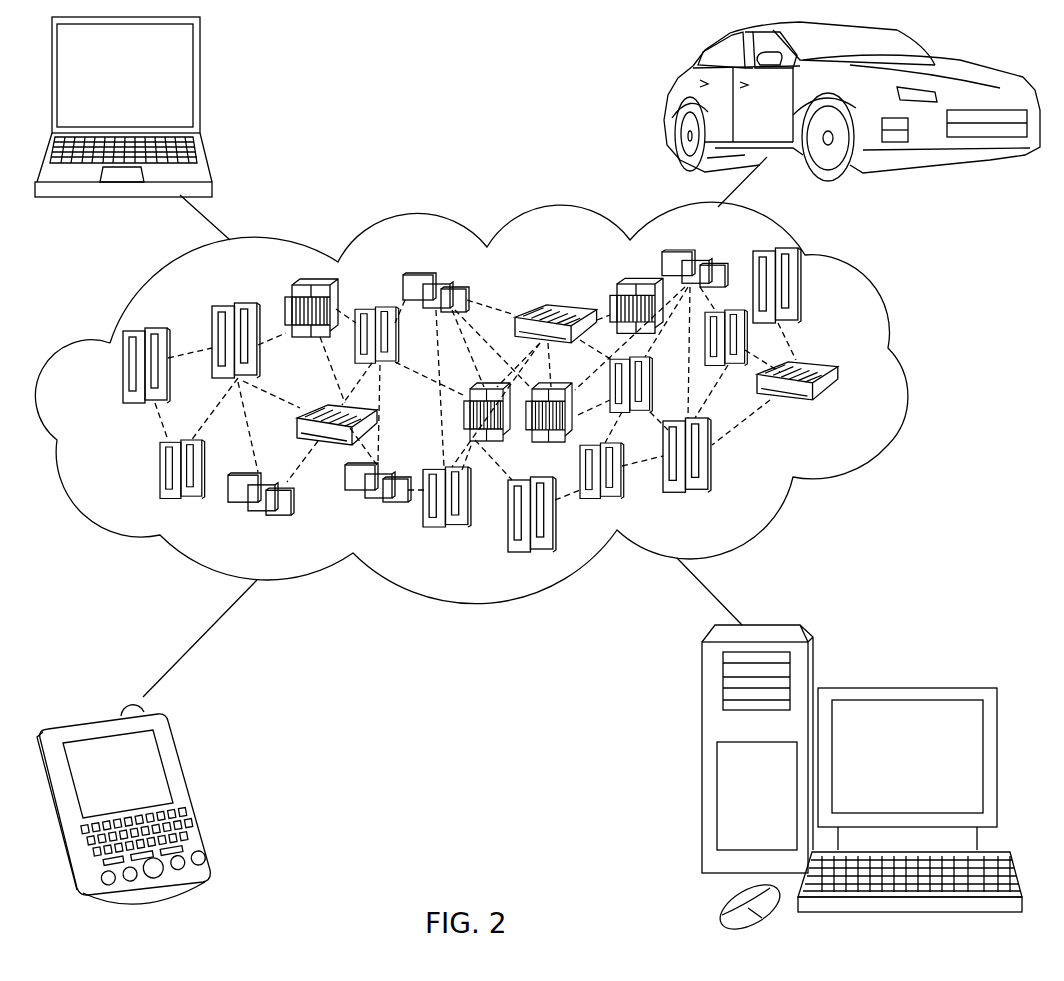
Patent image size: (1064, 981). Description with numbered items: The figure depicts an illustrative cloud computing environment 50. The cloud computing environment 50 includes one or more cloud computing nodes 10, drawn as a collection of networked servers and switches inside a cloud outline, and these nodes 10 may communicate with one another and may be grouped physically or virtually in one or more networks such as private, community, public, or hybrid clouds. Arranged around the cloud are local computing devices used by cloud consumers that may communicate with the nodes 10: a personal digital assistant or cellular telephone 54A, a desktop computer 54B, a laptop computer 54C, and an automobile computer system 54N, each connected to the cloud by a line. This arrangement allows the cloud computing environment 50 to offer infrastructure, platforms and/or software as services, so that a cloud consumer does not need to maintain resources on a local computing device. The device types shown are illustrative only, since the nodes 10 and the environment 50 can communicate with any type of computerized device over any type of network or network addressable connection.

The cloud computing node 10 is at (857, 413).
The cloud computing environment 50 is at (501, 403).
The personal digital assistant (PDA) or cellular telephone 54A is at (187, 793).
The desktop computer 54B is at (903, 688).
The laptop computer 54C is at (201, 85).
The automobile computer system 54N is at (666, 100).